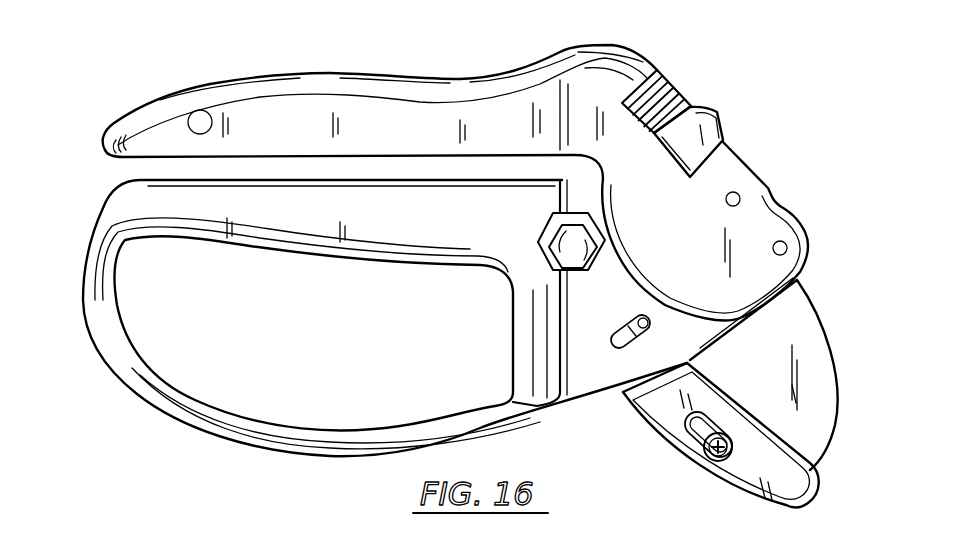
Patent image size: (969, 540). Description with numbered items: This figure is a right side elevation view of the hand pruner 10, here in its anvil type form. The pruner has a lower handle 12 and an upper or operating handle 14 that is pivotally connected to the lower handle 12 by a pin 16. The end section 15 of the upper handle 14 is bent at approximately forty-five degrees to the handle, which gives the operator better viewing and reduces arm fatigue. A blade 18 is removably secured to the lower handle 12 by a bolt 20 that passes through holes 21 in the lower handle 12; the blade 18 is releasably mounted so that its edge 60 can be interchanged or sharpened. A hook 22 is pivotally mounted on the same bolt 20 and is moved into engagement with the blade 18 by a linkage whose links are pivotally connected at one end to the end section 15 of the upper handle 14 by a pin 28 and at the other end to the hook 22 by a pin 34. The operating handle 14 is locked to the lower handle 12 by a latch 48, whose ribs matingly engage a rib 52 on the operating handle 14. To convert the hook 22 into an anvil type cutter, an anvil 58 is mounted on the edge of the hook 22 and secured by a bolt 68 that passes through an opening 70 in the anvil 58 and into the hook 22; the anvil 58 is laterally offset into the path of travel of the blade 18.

The hand pruner 10 is at (656, 42).
The lower handle 12 is at (113, 370).
The upper or operating handle 14 is at (314, 33).
The end section 15 is at (742, 152).
The pin 16 is at (726, 199).
The blade 18 is at (833, 423).
The bolt 20 is at (567, 258).
The holes 21 is at (557, 235).
The hook 22 is at (623, 391).
The pin 28 is at (787, 248).
The pin 34 is at (637, 320).
The latch 48 is at (725, 107).
The rib 52 is at (667, 88).
The anvil 58 is at (733, 483).
The edge 60 is at (810, 470).
The bolt 68 is at (710, 457).
The opening 70 is at (690, 433).